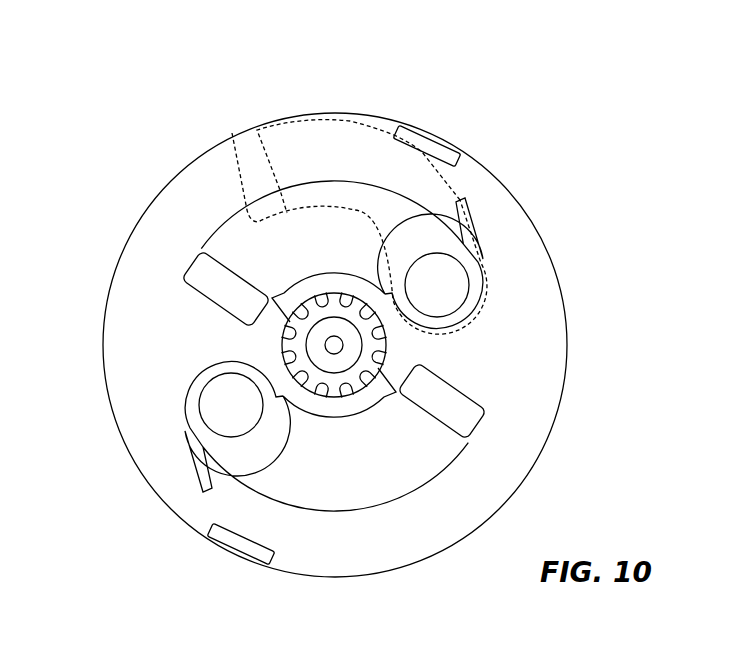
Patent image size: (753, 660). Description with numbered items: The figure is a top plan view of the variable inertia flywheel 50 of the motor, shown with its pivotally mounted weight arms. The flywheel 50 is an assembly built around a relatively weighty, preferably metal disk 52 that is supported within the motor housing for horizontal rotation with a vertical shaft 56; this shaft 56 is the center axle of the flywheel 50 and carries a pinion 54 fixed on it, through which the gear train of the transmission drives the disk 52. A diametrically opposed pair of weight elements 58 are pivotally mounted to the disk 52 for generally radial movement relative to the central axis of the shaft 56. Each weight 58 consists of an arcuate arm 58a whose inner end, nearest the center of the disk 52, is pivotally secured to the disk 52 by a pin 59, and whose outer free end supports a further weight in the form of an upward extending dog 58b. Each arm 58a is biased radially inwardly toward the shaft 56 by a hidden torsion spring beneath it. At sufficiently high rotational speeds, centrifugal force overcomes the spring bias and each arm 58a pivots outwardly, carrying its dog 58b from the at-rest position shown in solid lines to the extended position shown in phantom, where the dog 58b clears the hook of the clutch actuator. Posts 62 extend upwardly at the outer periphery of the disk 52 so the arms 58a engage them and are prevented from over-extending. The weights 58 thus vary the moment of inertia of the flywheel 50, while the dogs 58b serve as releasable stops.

The flywheel 50 is at (415, 88).
The disk 52 is at (505, 178).
The pinion 54 is at (283, 346).
The vertical shaft 56 is at (343, 345).
The weight element 58 is at (225, 235).
The arcuate arm 58a is at (243, 157).
The dog 58b is at (202, 273).
The pin 59 is at (443, 288).
The post 62 is at (433, 138).